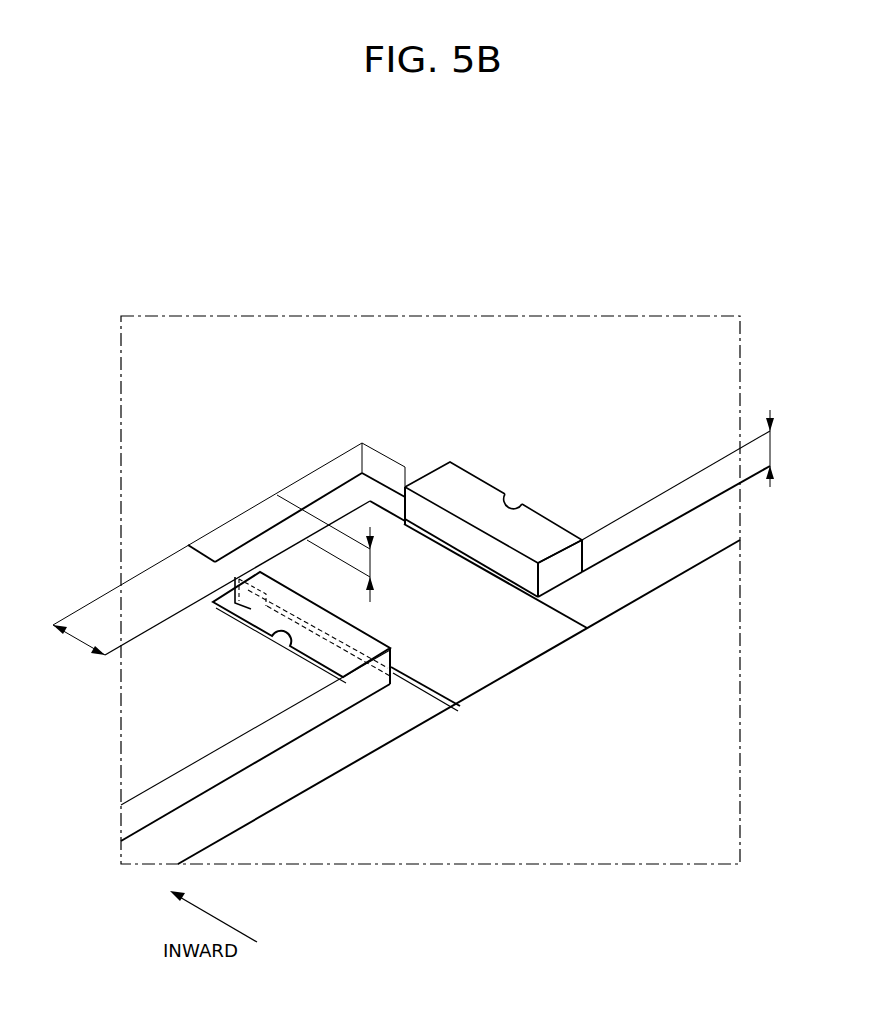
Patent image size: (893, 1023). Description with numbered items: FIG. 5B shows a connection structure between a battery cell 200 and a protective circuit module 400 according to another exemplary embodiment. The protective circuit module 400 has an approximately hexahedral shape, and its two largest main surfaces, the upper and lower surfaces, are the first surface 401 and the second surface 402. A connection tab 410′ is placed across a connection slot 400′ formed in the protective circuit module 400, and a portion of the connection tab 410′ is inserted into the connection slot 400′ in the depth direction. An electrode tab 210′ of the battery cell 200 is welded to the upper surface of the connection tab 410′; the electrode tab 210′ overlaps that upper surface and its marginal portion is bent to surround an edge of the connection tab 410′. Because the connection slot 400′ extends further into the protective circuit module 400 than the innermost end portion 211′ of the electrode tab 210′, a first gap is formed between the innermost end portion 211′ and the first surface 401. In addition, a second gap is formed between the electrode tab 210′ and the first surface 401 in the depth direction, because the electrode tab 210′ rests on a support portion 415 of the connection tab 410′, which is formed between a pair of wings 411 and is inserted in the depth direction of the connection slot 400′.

The protective circuit module 400 is at (685, 424).
The battery cell 200 is at (586, 762).
The first surface 401 is at (150, 790).
The second surface 402 is at (155, 820).
The connection slot 400′ is at (271, 542).
The innermost end portion 211′ is at (348, 513).
The electrode tab 210′ is at (383, 520).
The connection tab 410′ is at (457, 458).
The support portion 415 is at (450, 543).
The wings 411 is at (543, 543).